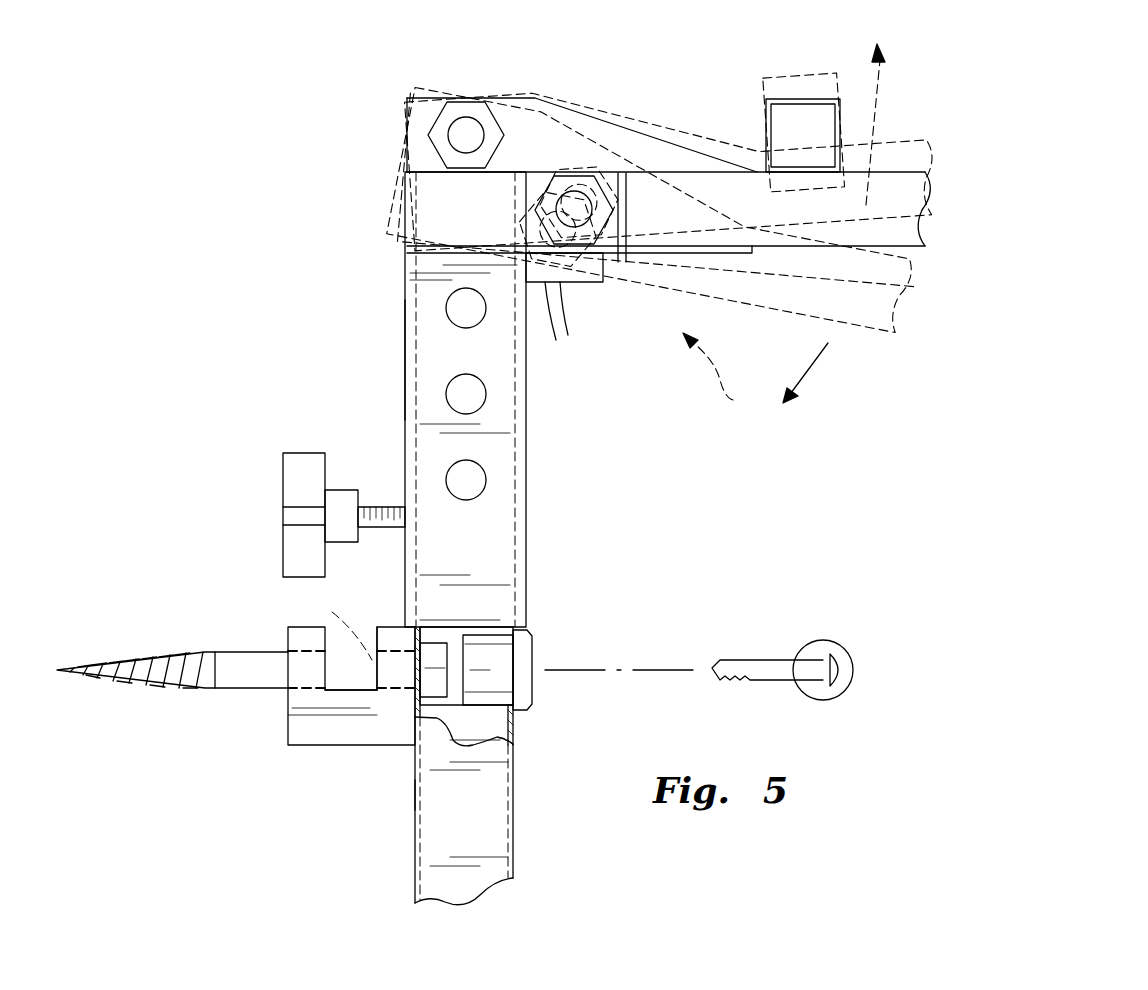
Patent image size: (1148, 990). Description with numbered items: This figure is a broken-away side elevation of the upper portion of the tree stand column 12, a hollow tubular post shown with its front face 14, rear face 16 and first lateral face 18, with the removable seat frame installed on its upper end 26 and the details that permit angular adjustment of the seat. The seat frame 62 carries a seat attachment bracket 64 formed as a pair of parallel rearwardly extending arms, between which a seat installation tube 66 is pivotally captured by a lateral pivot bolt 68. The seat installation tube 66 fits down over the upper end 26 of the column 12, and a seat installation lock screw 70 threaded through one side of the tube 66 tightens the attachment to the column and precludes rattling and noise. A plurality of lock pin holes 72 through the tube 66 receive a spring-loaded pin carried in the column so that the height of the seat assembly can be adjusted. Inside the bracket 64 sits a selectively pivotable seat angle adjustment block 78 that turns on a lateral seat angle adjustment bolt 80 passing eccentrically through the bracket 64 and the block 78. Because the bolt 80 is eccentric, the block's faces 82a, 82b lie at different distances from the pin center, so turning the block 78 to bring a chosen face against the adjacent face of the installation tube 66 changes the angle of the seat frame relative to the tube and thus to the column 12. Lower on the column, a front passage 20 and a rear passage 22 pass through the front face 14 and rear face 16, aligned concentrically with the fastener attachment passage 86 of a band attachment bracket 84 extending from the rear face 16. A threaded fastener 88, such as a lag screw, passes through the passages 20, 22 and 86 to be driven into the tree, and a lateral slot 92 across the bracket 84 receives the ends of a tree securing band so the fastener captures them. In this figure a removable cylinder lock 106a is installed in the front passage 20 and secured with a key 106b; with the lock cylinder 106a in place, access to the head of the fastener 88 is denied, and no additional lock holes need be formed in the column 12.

The column 12 is at (373, 858).
The front face 14 is at (513, 843).
The rear face 16 is at (415, 793).
The first lateral face 18 is at (485, 826).
The front passage 20 is at (486, 700).
The rear passage 22 is at (392, 645).
The upper end 26 is at (405, 293).
The seat frame 62 is at (838, 213).
The seat attachment bracket 64 is at (680, 173).
The seat installation tube 66 is at (405, 378).
The lateral pivot bolt 68 is at (453, 102).
The seat installation lock screw 70 is at (283, 470).
The lock pin holes 72 is at (484, 320).
The seat angle adjustment block 78 is at (755, 376).
The seat angle adjustment bolt 80 is at (592, 255).
The angle adjustment bearing face 82a is at (545, 290).
The angle adjustment bearing face 82b is at (627, 197).
The band attachment bracket 84 is at (288, 733).
The fastener attachment passage 86 is at (339, 625).
The threaded fastener 88 is at (233, 652).
The lateral slot 92 is at (347, 690).
The removable cylinder lock 106a is at (532, 643).
The key 106b is at (823, 640).